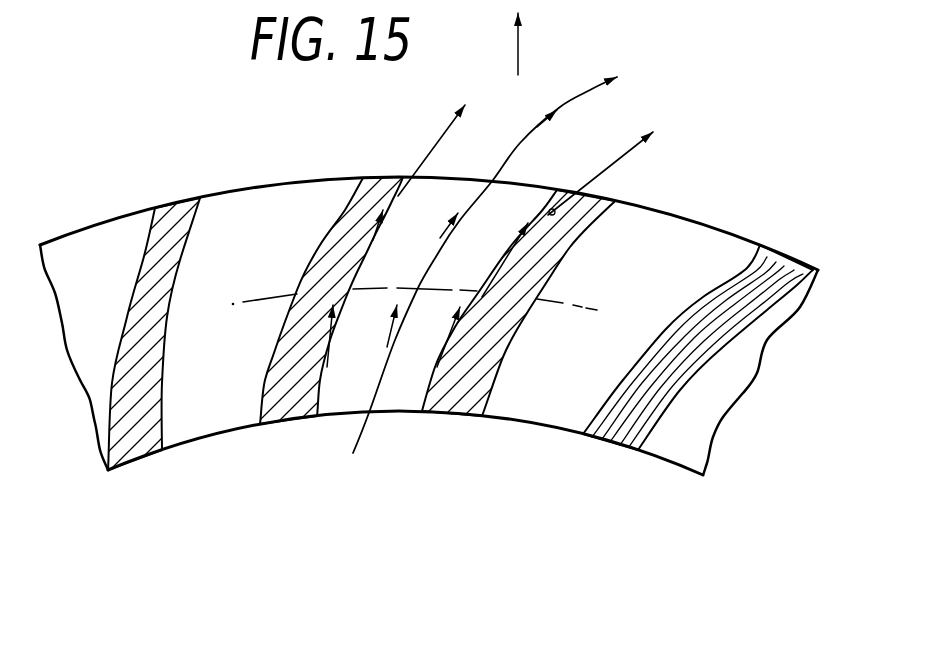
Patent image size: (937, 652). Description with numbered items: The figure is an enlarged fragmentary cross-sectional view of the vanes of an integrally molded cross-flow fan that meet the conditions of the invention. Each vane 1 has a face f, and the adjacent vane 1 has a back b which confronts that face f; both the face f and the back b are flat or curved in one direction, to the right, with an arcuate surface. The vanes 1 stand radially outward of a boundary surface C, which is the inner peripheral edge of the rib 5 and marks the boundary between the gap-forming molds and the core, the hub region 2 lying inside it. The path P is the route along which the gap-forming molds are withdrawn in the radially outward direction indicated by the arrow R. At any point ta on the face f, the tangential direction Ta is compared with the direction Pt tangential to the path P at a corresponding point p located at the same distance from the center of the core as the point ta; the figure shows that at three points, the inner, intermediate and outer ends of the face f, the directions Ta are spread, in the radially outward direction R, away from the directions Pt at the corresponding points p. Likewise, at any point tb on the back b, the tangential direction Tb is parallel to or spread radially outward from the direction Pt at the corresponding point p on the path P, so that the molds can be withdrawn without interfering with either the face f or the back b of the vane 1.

The vane 1 is at (282, 408).
The hub ring 2 is at (333, 407).
The rib 5 is at (713, 248).
The boundary surface C is at (493, 423).
The radially outward direction R is at (530, 44).
The path P is at (485, 254).
The tangential direction to the path Pt is at (463, 228).
The tangential direction to the face Ta is at (537, 239).
The tangential direction to the back Tb is at (396, 236).
The point on the face ta is at (494, 304).
The point on the back tb is at (355, 301).
The corresponding point on the path p is at (423, 279).
The back b is at (405, 196).
The face f is at (555, 214).